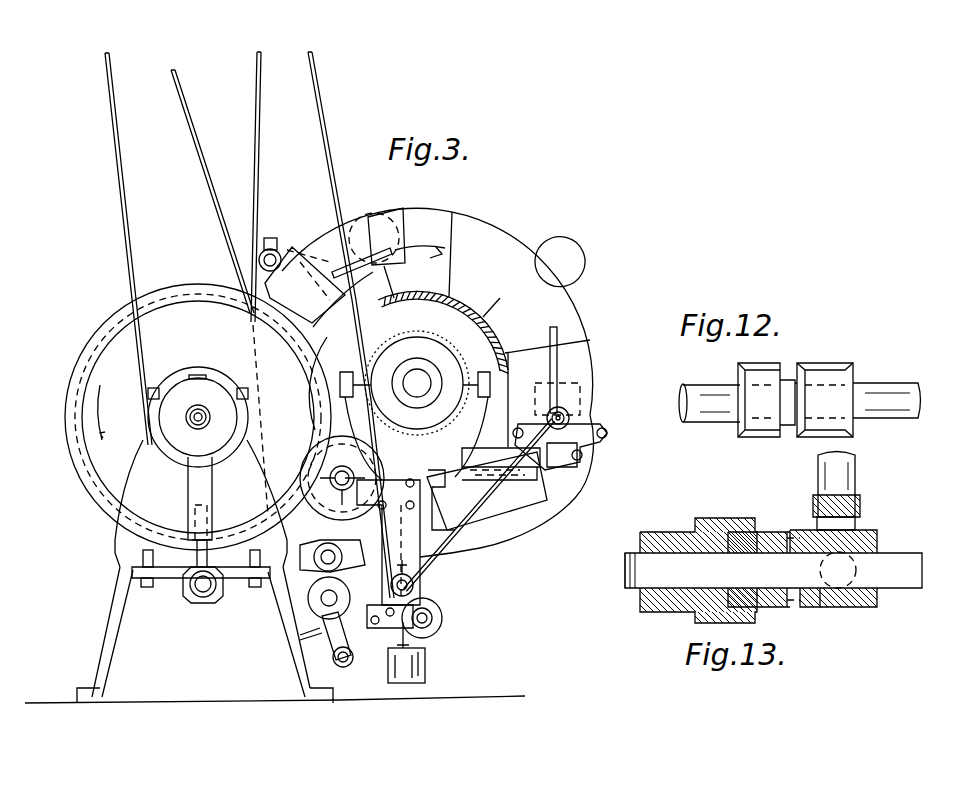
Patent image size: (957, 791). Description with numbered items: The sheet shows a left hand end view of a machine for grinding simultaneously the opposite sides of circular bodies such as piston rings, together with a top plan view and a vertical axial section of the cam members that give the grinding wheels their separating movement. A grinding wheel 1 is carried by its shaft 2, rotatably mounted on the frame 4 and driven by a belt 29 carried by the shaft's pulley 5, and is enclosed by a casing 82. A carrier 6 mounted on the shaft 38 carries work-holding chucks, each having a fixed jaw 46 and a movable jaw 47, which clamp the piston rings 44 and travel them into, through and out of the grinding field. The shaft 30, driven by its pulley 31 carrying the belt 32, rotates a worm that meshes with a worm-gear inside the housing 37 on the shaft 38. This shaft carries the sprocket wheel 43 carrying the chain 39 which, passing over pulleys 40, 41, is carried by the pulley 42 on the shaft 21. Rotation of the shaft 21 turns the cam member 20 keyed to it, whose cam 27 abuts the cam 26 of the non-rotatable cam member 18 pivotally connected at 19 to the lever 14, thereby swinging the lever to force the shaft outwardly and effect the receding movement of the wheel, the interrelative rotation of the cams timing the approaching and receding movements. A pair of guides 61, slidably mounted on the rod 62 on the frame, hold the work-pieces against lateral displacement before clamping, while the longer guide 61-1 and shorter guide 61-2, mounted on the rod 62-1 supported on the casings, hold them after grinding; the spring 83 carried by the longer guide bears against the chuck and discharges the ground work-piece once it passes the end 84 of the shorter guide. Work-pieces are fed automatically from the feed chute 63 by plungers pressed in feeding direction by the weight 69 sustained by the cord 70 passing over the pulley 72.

In FIG. 3, the grinding wheel 1 is at (216, 270).
In FIG. 3, the shaft 2 is at (195, 428).
In FIG. 3, the frame 4 is at (309, 559).
In FIG. 3, the pulley 5 is at (206, 384).
In FIG. 3, the carrier 6 is at (437, 327).
In FIG. 13, the lever 14 is at (865, 472).
In FIG. 12, the non-rotatable cam member 18 is at (835, 362).
In FIG. 13, the non-rotatable cam member 18 is at (875, 528).
In FIG. 13, the pivotal connection 19 is at (825, 610).
In FIG. 12, the cam member 20 is at (762, 362).
In FIG. 13, the cam member 20 is at (760, 530).
In FIG. 3, the shaft 21 is at (190, 603).
In FIG. 12, the shaft 21 is at (715, 418).
In FIG. 13, the shaft 21 is at (773, 570).
In FIG. 12, the cam 26 is at (788, 430).
In FIG. 13, the cam 26 is at (797, 530).
In FIG. 12, the cam 27 is at (797, 365).
In FIG. 13, the cam 27 is at (790, 610).
In FIG. 3, the belt 29 is at (130, 173).
In FIG. 3, the shaft 30 is at (342, 478).
In FIG. 3, the pulley 31 is at (402, 455).
In FIG. 3, the belt 32 is at (222, 223).
In FIG. 3, the housing 37 is at (415, 379).
In FIG. 3, the shaft 38 is at (417, 383).
In FIG. 3, the chain 39 is at (465, 470).
In FIG. 3, the pulley 40 is at (340, 562).
In FIG. 3, the pulley 41 is at (350, 600).
In FIG. 3, the pulley 42 is at (208, 598).
In FIG. 3, the sprocket wheel 43 is at (417, 383).
In FIG. 3, the piston ring 44 is at (452, 320).
In FIG. 3, the fixed jaw 46 is at (423, 290).
In FIG. 3, the movable jaw 47 is at (471, 266).
In FIG. 3, the guide 61 is at (479, 505).
In FIG. 3, the longer guide 61-1 is at (412, 210).
In FIG. 3, the shorter guide 61-2 is at (318, 243).
In FIG. 3, the rod 62 is at (415, 592).
In FIG. 3, the rod 62-1 is at (275, 248).
In FIG. 3, the feed chute 63 is at (583, 440).
In FIG. 3, the weight 69 is at (430, 662).
In FIG. 3, the cord 70 is at (445, 576).
In FIG. 3, the pulley 72 is at (444, 612).
In FIG. 3, the casing 82 is at (198, 417).
In FIG. 3, the spring 83 is at (370, 262).
In FIG. 3, the end 84 is at (345, 255).